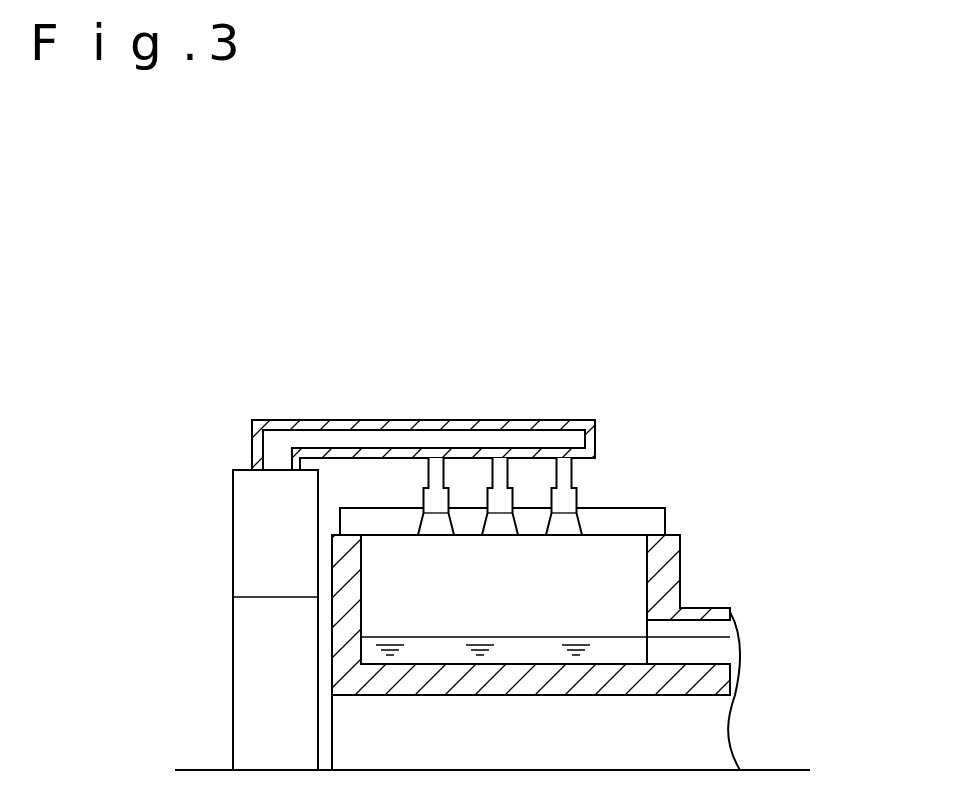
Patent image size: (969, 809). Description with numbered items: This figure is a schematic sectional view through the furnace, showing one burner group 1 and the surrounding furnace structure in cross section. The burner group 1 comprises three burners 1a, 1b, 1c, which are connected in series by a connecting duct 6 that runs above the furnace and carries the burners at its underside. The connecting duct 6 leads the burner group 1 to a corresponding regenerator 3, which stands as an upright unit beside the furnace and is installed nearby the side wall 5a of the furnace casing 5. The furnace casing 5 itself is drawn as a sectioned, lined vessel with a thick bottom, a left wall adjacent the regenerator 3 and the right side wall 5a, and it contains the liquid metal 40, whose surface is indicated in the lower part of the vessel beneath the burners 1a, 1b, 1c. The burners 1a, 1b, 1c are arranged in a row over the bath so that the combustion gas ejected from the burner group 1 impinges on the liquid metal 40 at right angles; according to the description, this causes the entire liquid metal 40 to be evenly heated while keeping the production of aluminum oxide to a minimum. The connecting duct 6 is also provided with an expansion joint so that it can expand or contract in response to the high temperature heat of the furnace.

The burner group 1 is at (502, 540).
The burner 1a is at (504, 525).
The burner 1b is at (437, 525).
The burner 1c is at (563, 525).
The regenerator 3 is at (280, 527).
The furnace casing 5 is at (513, 591).
The side wall 5a is at (680, 572).
The connecting duct 6 is at (413, 420).
The liquid metal 40 is at (418, 635).